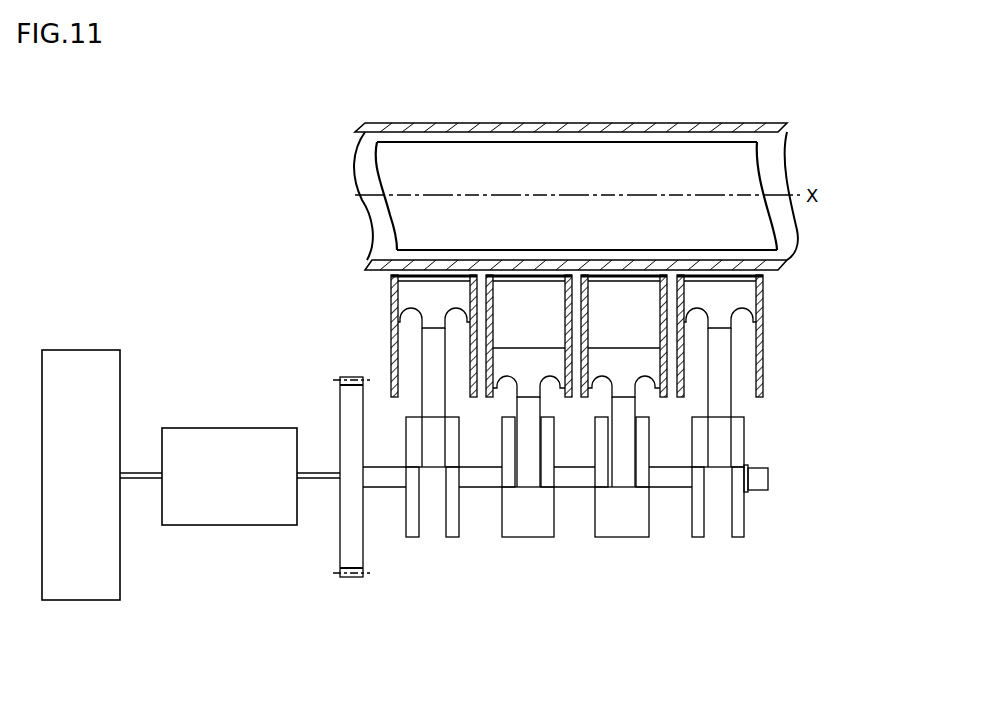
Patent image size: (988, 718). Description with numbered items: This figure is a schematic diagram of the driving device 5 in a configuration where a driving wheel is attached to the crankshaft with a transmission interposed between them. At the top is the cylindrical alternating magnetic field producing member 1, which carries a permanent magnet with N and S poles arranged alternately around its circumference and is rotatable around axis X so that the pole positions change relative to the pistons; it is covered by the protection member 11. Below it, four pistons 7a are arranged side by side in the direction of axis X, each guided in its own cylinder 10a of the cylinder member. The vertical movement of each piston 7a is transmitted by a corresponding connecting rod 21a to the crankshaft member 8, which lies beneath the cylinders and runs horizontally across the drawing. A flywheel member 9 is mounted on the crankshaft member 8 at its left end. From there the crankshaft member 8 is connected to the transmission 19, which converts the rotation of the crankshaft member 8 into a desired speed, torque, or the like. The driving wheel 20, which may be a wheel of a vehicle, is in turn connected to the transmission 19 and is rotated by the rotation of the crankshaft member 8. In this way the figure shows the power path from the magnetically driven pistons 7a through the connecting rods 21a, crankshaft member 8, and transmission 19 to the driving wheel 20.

The alternating magnetic field producing member 1 is at (672, 160).
The driving device 5 is at (748, 75).
The piston 7a is at (411, 296).
The crankshaft member 8 is at (762, 478).
The flywheel member 9 is at (352, 440).
The cylinder 10a is at (396, 316).
The protection member 11 is at (583, 124).
The transmission 19 is at (224, 427).
The driving wheel 20 is at (80, 349).
The connecting rod 21a is at (436, 410).